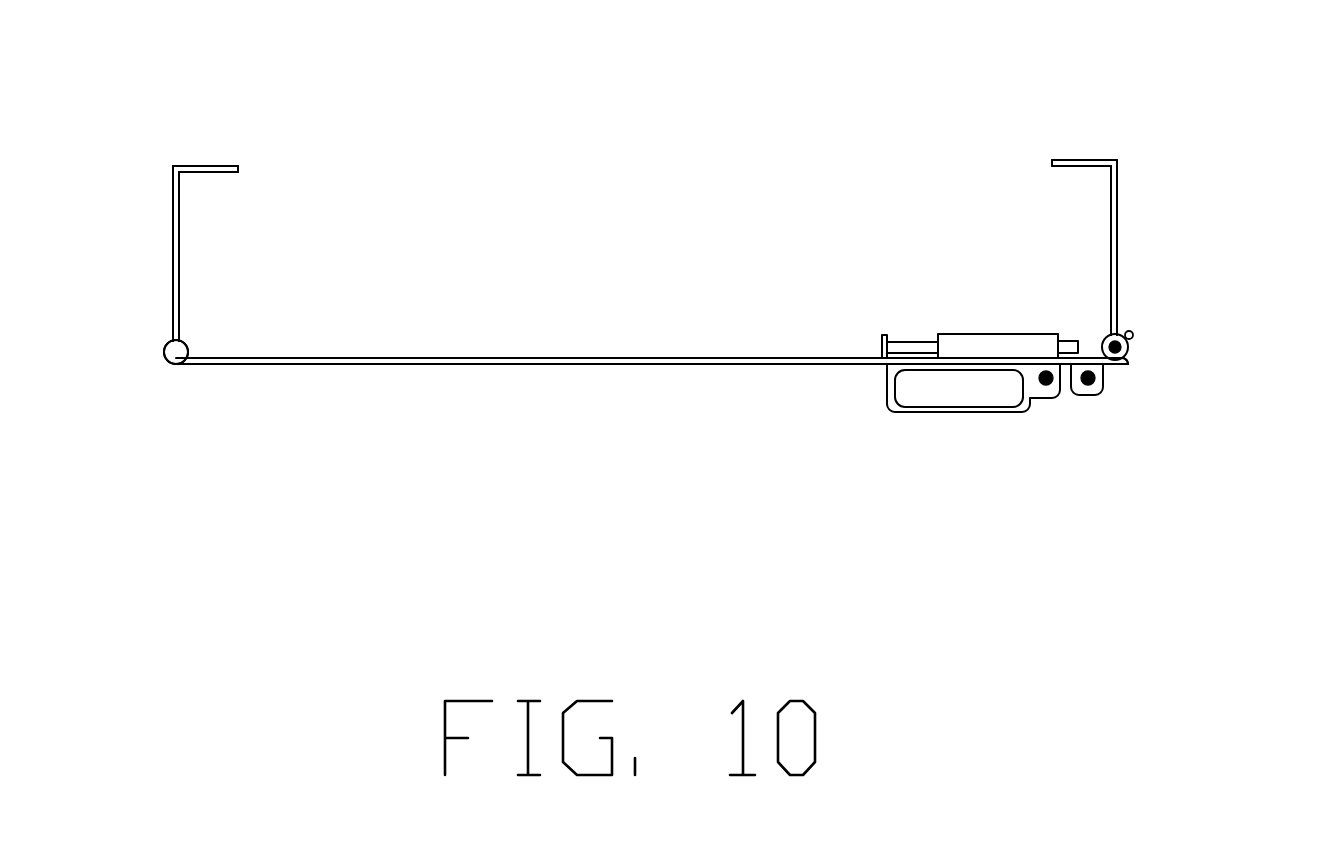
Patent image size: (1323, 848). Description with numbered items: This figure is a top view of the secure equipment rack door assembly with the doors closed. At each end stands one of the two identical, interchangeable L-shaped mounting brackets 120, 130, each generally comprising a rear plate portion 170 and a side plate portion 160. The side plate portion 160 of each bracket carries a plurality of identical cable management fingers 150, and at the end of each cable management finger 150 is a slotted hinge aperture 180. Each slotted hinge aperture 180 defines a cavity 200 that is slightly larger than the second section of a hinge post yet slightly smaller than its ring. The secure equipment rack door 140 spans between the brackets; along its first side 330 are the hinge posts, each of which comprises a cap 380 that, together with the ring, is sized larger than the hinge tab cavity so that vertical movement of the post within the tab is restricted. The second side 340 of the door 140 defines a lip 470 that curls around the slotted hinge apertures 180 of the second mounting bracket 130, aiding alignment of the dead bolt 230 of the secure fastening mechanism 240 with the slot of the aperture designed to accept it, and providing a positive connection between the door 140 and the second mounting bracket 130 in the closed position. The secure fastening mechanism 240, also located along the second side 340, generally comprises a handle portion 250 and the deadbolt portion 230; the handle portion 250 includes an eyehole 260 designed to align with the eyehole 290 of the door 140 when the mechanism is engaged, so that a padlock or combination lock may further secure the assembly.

The mounting bracket 120 is at (172, 133).
The second mounting bracket 130 is at (1117, 128).
The secure equipment rack door 140 is at (582, 418).
The cable management finger 150 is at (1113, 254).
The side plate portion 160 is at (178, 203).
The rear plate portion 170 is at (1062, 163).
The slotted hinge aperture 180 is at (1120, 334).
The cavity 200 is at (1131, 334).
The dead bolt 230 is at (898, 347).
The secure fastening mechanism 240 is at (906, 454).
The handle portion 250 is at (905, 392).
The eyehole 260 is at (1047, 370).
The eyehole 290 is at (1091, 388).
The first side 330 is at (175, 397).
The second side 340 is at (1187, 515).
The cap 380 is at (176, 350).
The lip 470 is at (1129, 358).